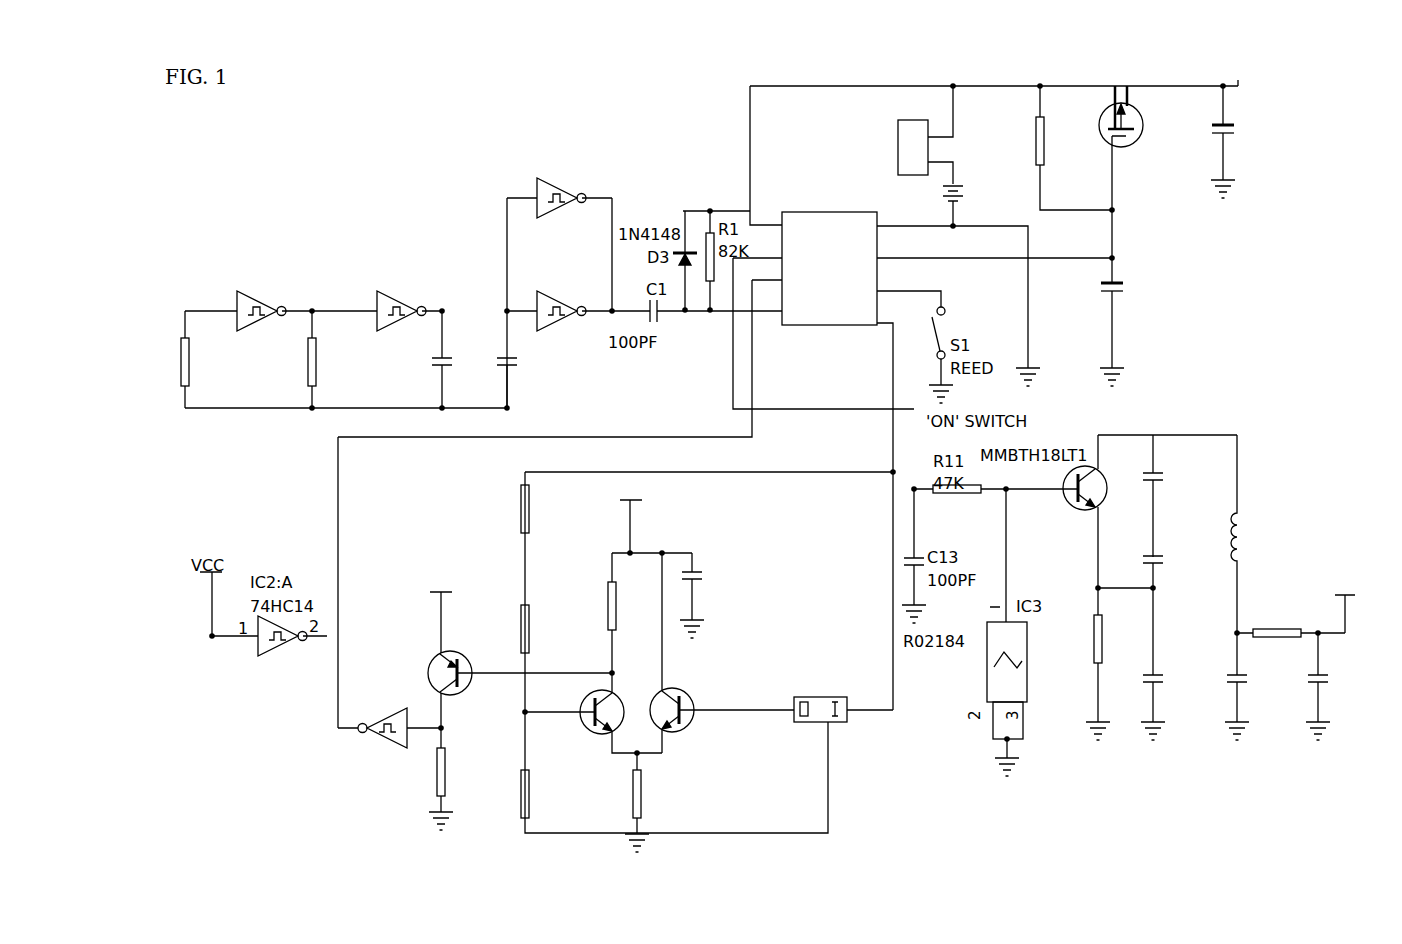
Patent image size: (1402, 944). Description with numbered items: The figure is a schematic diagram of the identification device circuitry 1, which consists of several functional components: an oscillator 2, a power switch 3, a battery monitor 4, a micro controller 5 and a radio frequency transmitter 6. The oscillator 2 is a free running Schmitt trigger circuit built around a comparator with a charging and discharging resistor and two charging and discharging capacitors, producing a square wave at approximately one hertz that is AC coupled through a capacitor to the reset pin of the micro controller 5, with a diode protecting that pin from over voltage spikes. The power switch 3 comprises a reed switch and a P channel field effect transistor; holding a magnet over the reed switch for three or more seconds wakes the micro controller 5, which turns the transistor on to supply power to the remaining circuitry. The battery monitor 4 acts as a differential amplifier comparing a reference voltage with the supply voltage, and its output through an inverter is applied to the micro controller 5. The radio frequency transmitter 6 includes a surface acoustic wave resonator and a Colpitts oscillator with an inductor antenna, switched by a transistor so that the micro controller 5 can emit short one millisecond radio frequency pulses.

The identification device circuitry 1 is at (412, 214).
The oscillator 2 is at (275, 418).
The power switch 3 is at (1145, 190).
The battery monitor 4 is at (733, 612).
The micro controller 5 is at (828, 337).
The radio frequency transmitter 6 is at (1178, 745).